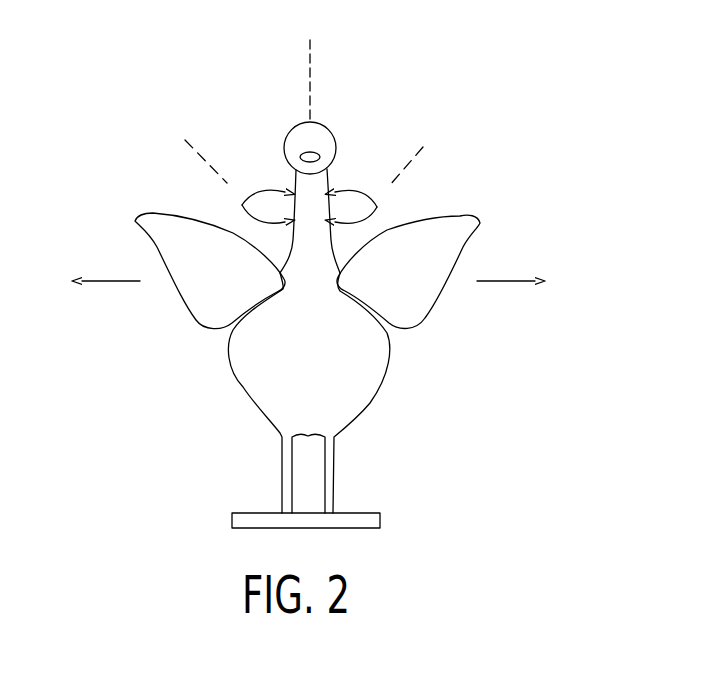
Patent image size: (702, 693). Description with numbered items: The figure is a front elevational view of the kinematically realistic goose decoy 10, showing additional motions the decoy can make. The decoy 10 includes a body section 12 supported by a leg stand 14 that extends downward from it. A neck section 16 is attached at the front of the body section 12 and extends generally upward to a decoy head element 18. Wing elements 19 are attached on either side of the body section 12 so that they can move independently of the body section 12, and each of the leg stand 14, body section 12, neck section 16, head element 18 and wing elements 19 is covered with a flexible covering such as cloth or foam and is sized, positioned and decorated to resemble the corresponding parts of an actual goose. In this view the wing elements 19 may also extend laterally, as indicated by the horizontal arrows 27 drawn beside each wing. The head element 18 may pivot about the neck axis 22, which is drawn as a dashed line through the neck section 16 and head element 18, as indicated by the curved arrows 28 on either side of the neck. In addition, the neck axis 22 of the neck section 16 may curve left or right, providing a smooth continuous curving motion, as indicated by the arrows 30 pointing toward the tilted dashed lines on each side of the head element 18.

The kinematically realistic goose decoy 10 is at (455, 83).
The body section 12 is at (343, 407).
The leg stand 14 is at (267, 475).
The neck section 16 is at (340, 243).
The decoy head element 18 is at (333, 120).
The wing elements 19 is at (157, 222).
The neck axis 22 is at (310, 82).
The arrows 27 is at (118, 282).
The arrows 28 is at (243, 207).
The arrows 30 is at (270, 123).